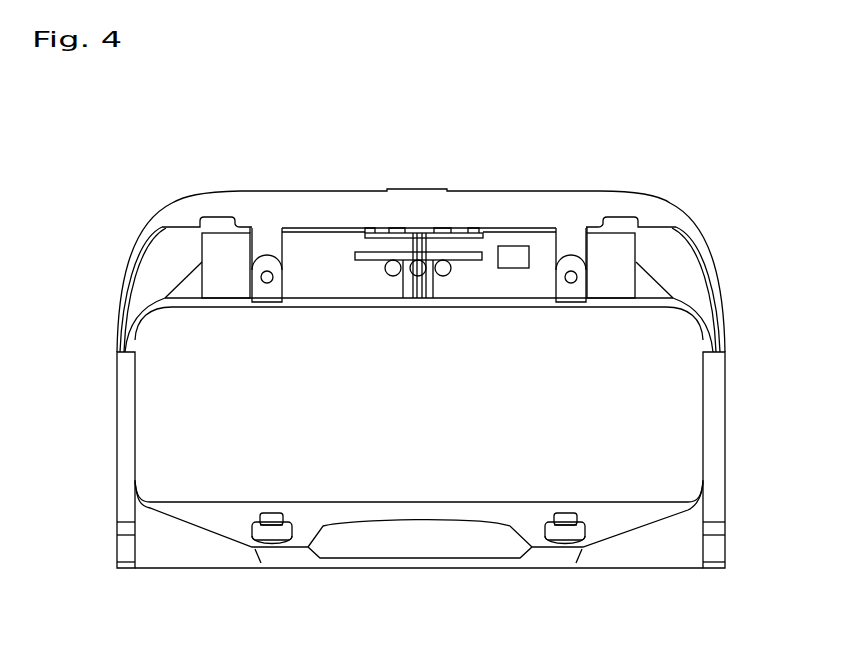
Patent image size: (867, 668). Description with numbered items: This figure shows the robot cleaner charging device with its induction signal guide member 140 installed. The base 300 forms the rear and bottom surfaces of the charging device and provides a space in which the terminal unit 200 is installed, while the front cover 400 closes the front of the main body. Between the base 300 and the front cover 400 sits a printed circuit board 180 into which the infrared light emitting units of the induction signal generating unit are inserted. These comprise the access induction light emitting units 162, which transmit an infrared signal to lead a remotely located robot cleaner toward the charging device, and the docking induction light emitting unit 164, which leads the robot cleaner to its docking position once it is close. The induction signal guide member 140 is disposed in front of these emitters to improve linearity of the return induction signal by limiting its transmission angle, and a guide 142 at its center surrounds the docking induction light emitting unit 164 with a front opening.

The induction signal guide member 140 is at (467, 255).
The guide 142 is at (428, 292).
The access induction light emitting unit 162 is at (392, 262).
The docking induction light emitting unit 164 is at (420, 262).
The printed circuit board 180 is at (618, 257).
The terminal unit 200 is at (271, 525).
The base 300 is at (618, 203).
The front cover 400 is at (682, 432).